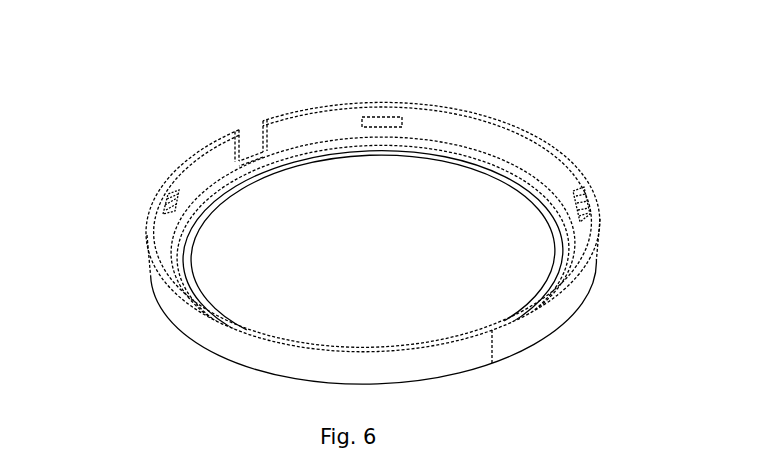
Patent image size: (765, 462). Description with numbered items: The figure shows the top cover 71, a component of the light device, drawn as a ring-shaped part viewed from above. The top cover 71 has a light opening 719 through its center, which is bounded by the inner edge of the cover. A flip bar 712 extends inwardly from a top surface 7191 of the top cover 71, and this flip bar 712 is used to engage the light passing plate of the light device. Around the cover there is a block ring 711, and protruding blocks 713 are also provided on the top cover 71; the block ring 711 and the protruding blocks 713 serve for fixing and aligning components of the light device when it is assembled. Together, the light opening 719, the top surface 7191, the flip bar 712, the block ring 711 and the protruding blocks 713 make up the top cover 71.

The top cover 71 is at (323, 120).
The block ring 711 is at (467, 148).
The flip bar 712 is at (227, 190).
The protruding blocks 713 is at (157, 193).
The light opening 719 is at (515, 202).
The top surface 7191 is at (225, 270).